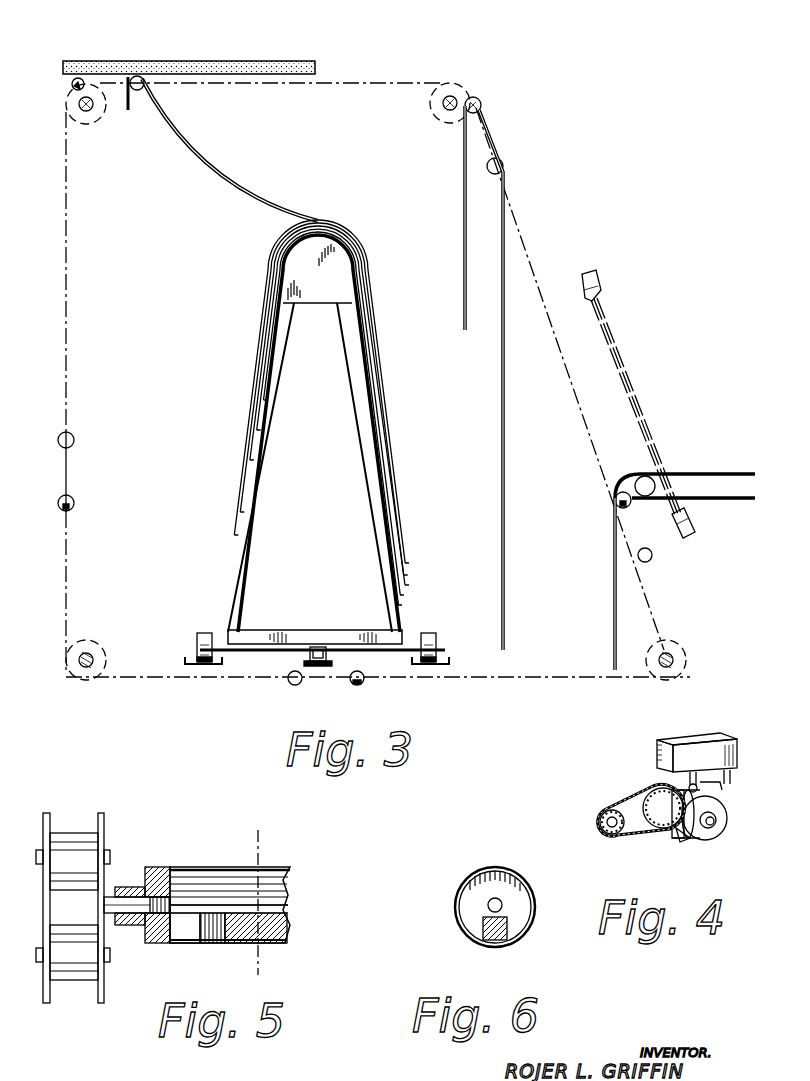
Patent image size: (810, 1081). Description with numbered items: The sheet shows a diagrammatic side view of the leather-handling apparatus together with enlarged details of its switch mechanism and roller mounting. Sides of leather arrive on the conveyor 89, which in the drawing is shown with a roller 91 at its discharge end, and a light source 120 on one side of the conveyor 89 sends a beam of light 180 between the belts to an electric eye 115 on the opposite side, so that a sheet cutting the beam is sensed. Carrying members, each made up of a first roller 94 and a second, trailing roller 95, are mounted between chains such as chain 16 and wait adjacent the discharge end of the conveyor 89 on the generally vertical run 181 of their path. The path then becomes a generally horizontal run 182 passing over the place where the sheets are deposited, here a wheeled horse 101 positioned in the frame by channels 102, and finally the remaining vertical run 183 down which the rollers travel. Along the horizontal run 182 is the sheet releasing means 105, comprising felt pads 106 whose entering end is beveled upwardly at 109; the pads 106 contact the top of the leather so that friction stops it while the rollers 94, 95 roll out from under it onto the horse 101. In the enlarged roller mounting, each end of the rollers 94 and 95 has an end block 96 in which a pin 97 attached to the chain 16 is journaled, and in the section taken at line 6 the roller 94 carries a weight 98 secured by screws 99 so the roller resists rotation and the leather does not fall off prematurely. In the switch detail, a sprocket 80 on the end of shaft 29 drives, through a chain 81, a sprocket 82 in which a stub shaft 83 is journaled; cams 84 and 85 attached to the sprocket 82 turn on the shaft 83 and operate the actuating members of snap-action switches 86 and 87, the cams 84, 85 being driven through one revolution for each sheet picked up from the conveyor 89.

In FIG. 3, the sheet releasing means 105 is at (236, 60).
In FIG. 3, the felt pads 106 is at (262, 80).
In FIG. 3, the beveled entering end 109 is at (308, 78).
In FIG. 3, the generally horizontal run 182 is at (393, 86).
In FIG. 3, the remaining vertical run 183 is at (68, 318).
In FIG. 3, the generally vertical run 181 is at (530, 258).
In FIG. 3, the first roller 94 is at (482, 105).
In FIG. 5, the first roller 94 is at (193, 866).
In FIG. 6, the first roller 94 is at (465, 930).
In FIG. 3, the second roller 95 is at (72, 436).
In FIG. 3, the weight 98 is at (360, 684).
In FIG. 5, the weight 98 is at (290, 926).
In FIG. 6, the weight 98 is at (520, 935).
In FIG. 3, the wheeled horse 101 is at (242, 572).
In FIG. 3, the channels 102 is at (196, 665).
In FIG. 3, the electric eye 115 is at (598, 283).
In FIG. 3, the beam of light 180 is at (658, 432).
In FIG. 3, the light source 120 is at (678, 530).
In FIG. 3, the conveyor 89 is at (735, 504).
In FIG. 3, the belt pulley 91 is at (656, 486).
In FIG. 5, the chain 16 is at (104, 993).
In FIG. 5, the pin 97 is at (130, 898).
In FIG. 5, the end block 96 is at (137, 926).
In FIG. 6, the end block 96 is at (477, 905).
In FIG. 5, the screws 99 is at (218, 942).
In FIG. 5, the section line 6— 6 is at (236, 843).
In FIG. 4, the snap-action switch 86 is at (700, 736).
In FIG. 4, the snap-action switch 87 is at (725, 745).
In FIG. 4, the cam 85 is at (720, 810).
In FIG. 4, the stub shaft 83 is at (716, 824).
In FIG. 4, the cam 84 is at (662, 808).
In FIG. 4, the sprocket 80 is at (608, 805).
In FIG. 4, the chain 81 is at (645, 838).
In FIG. 4, the shaft 29 is at (604, 838).
In FIG. 4, the sprocket 82 is at (678, 842).